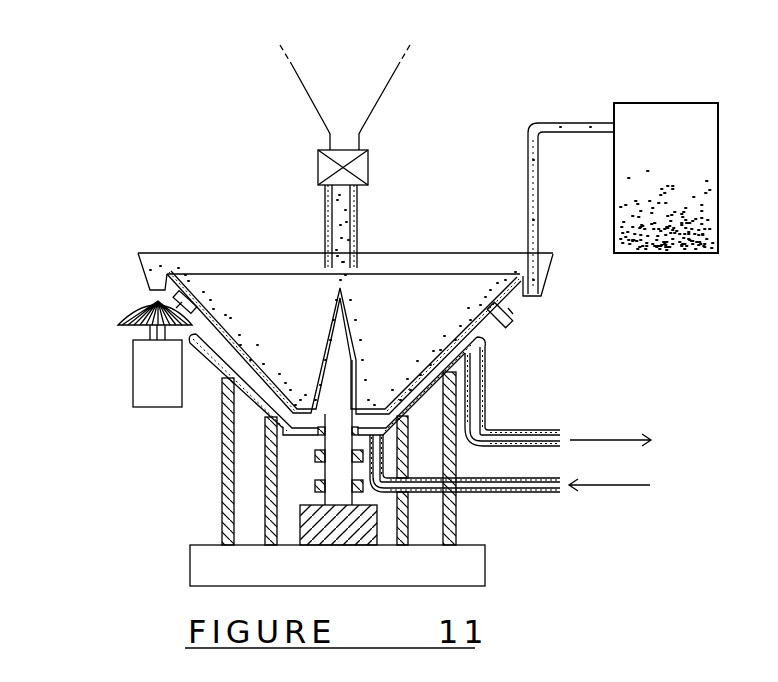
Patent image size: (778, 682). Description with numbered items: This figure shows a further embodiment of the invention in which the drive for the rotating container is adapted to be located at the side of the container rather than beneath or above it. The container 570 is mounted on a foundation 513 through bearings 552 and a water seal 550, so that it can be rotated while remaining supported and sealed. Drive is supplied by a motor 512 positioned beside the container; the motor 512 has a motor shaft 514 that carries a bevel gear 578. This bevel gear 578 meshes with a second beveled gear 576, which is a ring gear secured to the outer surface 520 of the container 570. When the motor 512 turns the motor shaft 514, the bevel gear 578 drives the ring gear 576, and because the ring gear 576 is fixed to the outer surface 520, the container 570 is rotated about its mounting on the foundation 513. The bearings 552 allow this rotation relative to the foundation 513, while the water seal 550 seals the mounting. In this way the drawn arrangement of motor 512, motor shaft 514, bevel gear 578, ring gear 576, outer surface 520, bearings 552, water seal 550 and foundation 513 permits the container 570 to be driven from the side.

The motor 512 is at (153, 371).
The foundation 513 is at (473, 566).
The motor shaft 514 is at (145, 333).
The outer surface 520 is at (262, 381).
The water seal 550 is at (325, 437).
The bearings 552 is at (317, 484).
The container 570 is at (213, 330).
The second beveled gear 576 is at (133, 313).
The bevel gear 578 is at (185, 300).